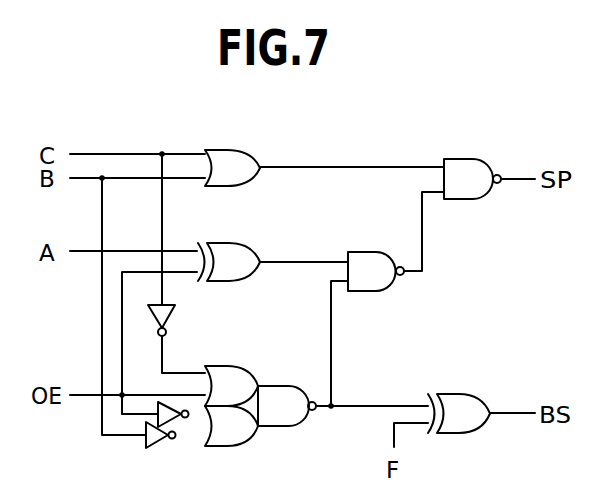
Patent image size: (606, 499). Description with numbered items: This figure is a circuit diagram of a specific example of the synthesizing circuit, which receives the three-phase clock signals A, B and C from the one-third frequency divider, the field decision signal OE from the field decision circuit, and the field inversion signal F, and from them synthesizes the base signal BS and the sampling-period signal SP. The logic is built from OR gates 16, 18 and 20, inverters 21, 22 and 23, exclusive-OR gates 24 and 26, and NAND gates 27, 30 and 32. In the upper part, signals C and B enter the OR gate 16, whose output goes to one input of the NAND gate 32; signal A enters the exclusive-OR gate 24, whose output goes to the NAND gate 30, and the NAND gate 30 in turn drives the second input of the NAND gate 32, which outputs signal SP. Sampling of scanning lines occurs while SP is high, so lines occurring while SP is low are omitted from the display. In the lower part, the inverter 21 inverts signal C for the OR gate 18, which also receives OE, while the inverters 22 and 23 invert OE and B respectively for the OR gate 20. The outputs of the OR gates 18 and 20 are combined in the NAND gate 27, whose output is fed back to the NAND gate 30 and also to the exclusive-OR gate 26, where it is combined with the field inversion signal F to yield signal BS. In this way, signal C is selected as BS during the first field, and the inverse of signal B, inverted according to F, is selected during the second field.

The OR gate 16 is at (232, 147).
The exclusive-OR gate 24 is at (238, 248).
The NAND gate 32 is at (478, 200).
The NAND gate 30 is at (389, 292).
The inverter 21 is at (173, 316).
The OR gate 18 is at (250, 369).
The OR gate 20 is at (246, 447).
The NAND gate 27 is at (294, 426).
The inverter 22 is at (177, 423).
The inverter 23 is at (143, 443).
The exclusive-OR gate 26 is at (481, 393).